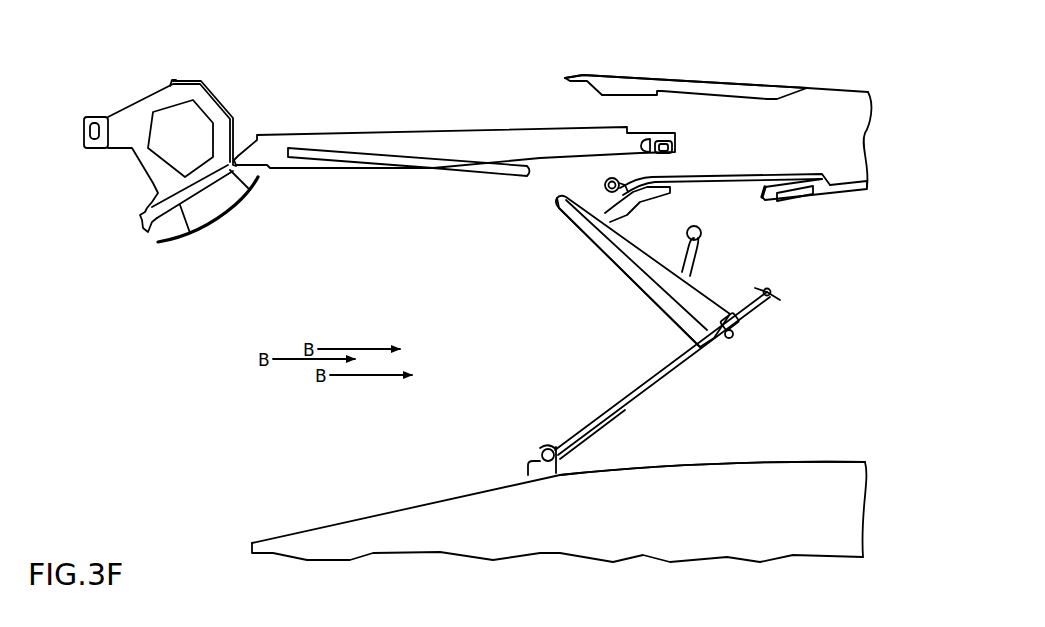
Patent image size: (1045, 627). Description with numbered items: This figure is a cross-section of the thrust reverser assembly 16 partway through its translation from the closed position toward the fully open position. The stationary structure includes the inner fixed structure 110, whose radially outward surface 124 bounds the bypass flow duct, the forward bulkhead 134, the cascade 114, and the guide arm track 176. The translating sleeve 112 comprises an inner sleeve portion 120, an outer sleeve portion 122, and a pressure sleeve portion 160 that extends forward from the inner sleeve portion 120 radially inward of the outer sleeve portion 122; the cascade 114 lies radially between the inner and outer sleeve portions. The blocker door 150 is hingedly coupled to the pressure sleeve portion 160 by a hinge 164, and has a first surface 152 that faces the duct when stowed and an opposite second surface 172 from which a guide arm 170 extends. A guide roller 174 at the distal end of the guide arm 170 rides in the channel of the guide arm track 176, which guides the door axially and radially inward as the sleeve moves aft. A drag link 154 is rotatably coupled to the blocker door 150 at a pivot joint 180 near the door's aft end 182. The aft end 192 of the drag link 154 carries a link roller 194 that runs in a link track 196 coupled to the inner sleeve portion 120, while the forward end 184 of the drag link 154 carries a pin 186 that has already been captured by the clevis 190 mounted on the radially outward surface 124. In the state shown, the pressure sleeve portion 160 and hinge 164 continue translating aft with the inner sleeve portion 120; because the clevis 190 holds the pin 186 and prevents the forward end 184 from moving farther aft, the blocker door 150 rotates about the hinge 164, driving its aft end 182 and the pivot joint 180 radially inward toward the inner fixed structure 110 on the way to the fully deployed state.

The thrust reverser assembly 16 is at (650, 63).
The inner fixed structure 110 is at (845, 470).
The translating sleeve 112 is at (903, 78).
The cascade 114 is at (430, 143).
The inner sleeve portion 120 is at (846, 183).
The outer sleeve portion 122 is at (740, 85).
The radially outward surface 124 is at (802, 462).
The forward bulkhead 134 is at (145, 108).
The blocker door 150 is at (635, 272).
The first surface 152 is at (610, 270).
The drag link 154 is at (632, 424).
The pressure sleeve portion 160 is at (717, 178).
The hinge 164 is at (658, 200).
The guide arm 170 is at (688, 262).
The second surface 172 is at (745, 292).
The guide roller 174 is at (701, 233).
The guide arm track 176 is at (300, 150).
The pivot joint 180 is at (727, 340).
The aft end 182 is at (733, 330).
The forward end 184 is at (556, 445).
The pin 186 is at (540, 456).
The clevis 190 is at (550, 472).
The aft end 192 is at (770, 297).
The link roller 194 is at (770, 300).
The link track 196 is at (800, 203).